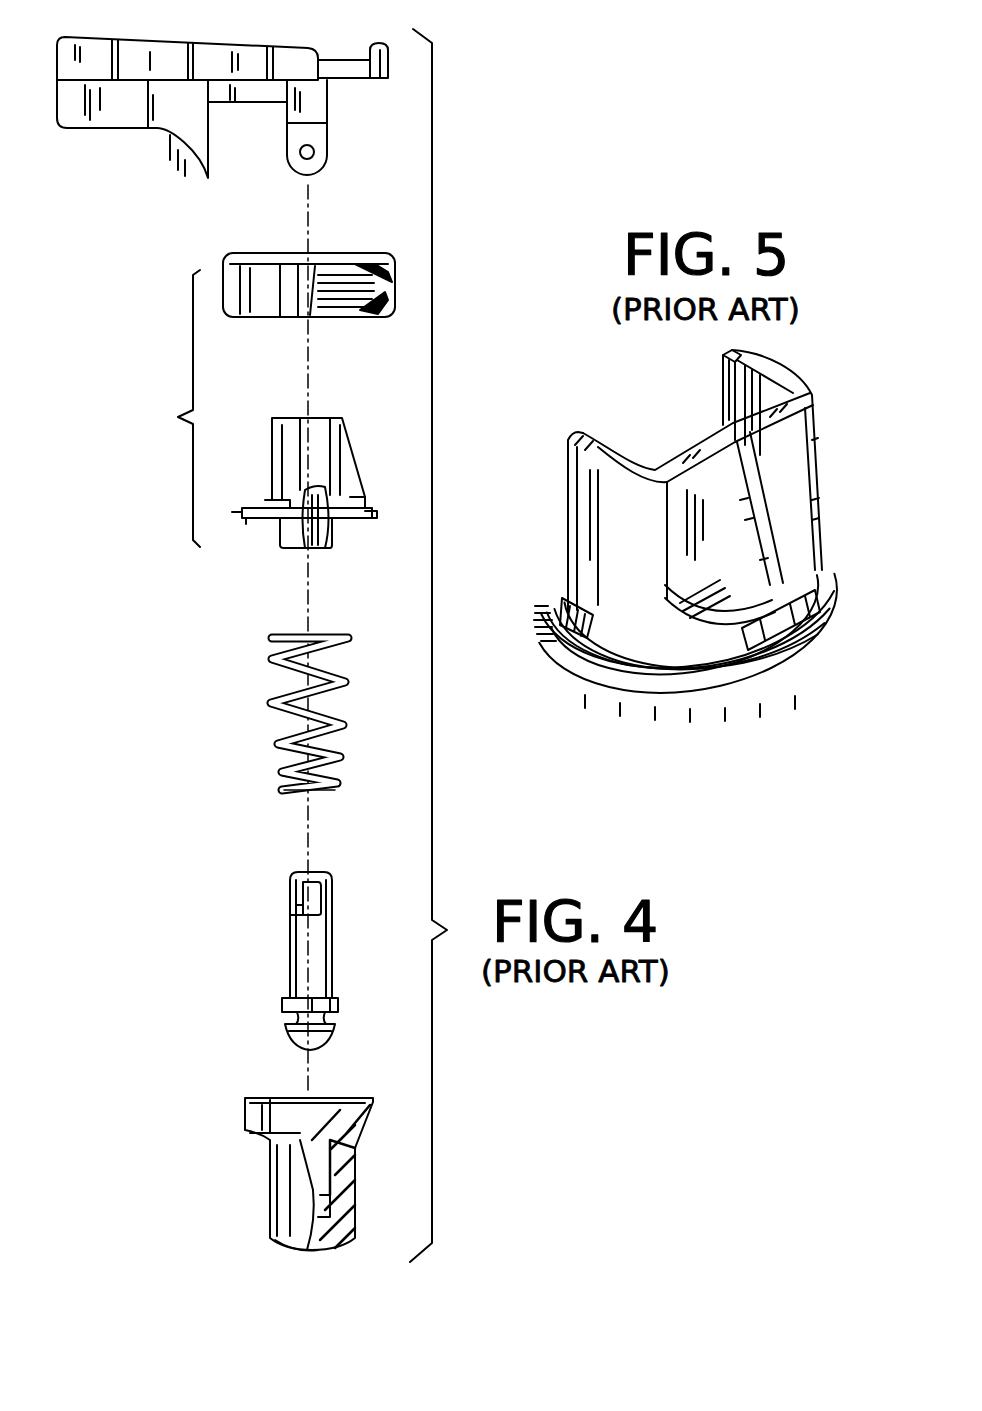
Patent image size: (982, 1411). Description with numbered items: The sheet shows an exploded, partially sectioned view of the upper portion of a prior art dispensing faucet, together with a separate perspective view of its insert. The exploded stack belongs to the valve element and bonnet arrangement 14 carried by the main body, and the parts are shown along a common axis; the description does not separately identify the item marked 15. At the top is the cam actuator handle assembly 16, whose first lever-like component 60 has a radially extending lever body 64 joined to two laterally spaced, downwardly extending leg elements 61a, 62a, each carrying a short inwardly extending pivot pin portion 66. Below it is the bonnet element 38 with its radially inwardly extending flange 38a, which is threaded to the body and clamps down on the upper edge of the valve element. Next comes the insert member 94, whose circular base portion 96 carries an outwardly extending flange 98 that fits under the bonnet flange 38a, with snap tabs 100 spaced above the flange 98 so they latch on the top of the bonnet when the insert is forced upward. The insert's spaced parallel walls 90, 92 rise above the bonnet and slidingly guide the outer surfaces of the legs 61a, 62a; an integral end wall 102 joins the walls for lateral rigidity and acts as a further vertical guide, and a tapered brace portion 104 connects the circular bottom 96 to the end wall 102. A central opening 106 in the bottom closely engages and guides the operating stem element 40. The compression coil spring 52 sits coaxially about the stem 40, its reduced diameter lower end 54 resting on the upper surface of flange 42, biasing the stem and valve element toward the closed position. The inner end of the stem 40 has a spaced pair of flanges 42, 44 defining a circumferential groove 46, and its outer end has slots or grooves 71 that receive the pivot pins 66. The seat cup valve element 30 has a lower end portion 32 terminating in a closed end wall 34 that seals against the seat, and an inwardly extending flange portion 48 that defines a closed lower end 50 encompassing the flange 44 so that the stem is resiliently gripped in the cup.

In FIG. 4, the valve element and bonnet arrangement 14 is at (158, 427).
In FIG. 4, the valve stem subassembly 15 is at (447, 188).
In FIG. 4, the cam actuator handle assembly 16 is at (234, 104).
In FIG. 4, the seat cup valve element 30 is at (297, 1193).
In FIG. 4, the lower cylindrical or frusto-conical end portion 32 is at (356, 1167).
In FIG. 4, the closed end wall 34 is at (293, 1248).
In FIG. 4, the bonnet element 38 is at (278, 255).
In FIG. 4, the radially inwardly extending flange 38a is at (365, 255).
In FIG. 4, the operating stem element 40 is at (299, 961).
In FIG. 4, the flange 42 is at (339, 1004).
In FIG. 4, the flange 44 is at (336, 1026).
In FIG. 4, the circumferential groove 46 is at (296, 1018).
In FIG. 4, the inwardly extending flange portion 48 is at (327, 1198).
In FIG. 4, the closed lower end 50 is at (318, 1217).
In FIG. 4, the compression coil spring 52 is at (302, 740).
In FIG. 4, the reduced diameter lower end 54 is at (338, 786).
In FIG. 4, the first lever-like component 60 is at (318, 93).
In FIG. 4, the leg element 61a is at (327, 157).
In FIG. 4, the leg element 62a is at (322, 120).
In FIG. 4, the radially extending lever body 64 is at (235, 92).
In FIG. 4, the pivot pin portions 66 is at (303, 158).
In FIG. 4, the slots or grooves 71 is at (304, 905).
In FIG. 5, the wall 90 is at (597, 482).
In FIG. 5, the wall 92 is at (773, 365).
In FIG. 4, the insert member 94 is at (307, 479).
In FIG. 5, the insert member 94 is at (667, 553).
In FIG. 5, the circular base portion 96 is at (577, 688).
In FIG. 4, the outwardly extending flange 98 is at (374, 515).
In FIG. 5, the outwardly extending flange 98 is at (535, 632).
In FIG. 5, the snap tabs 100 is at (565, 603).
In FIG. 5, the end wall 102 is at (724, 421).
In FIG. 5, the tapered brace portion 104 is at (763, 518).
In FIG. 4, the central opening 106 is at (317, 552).